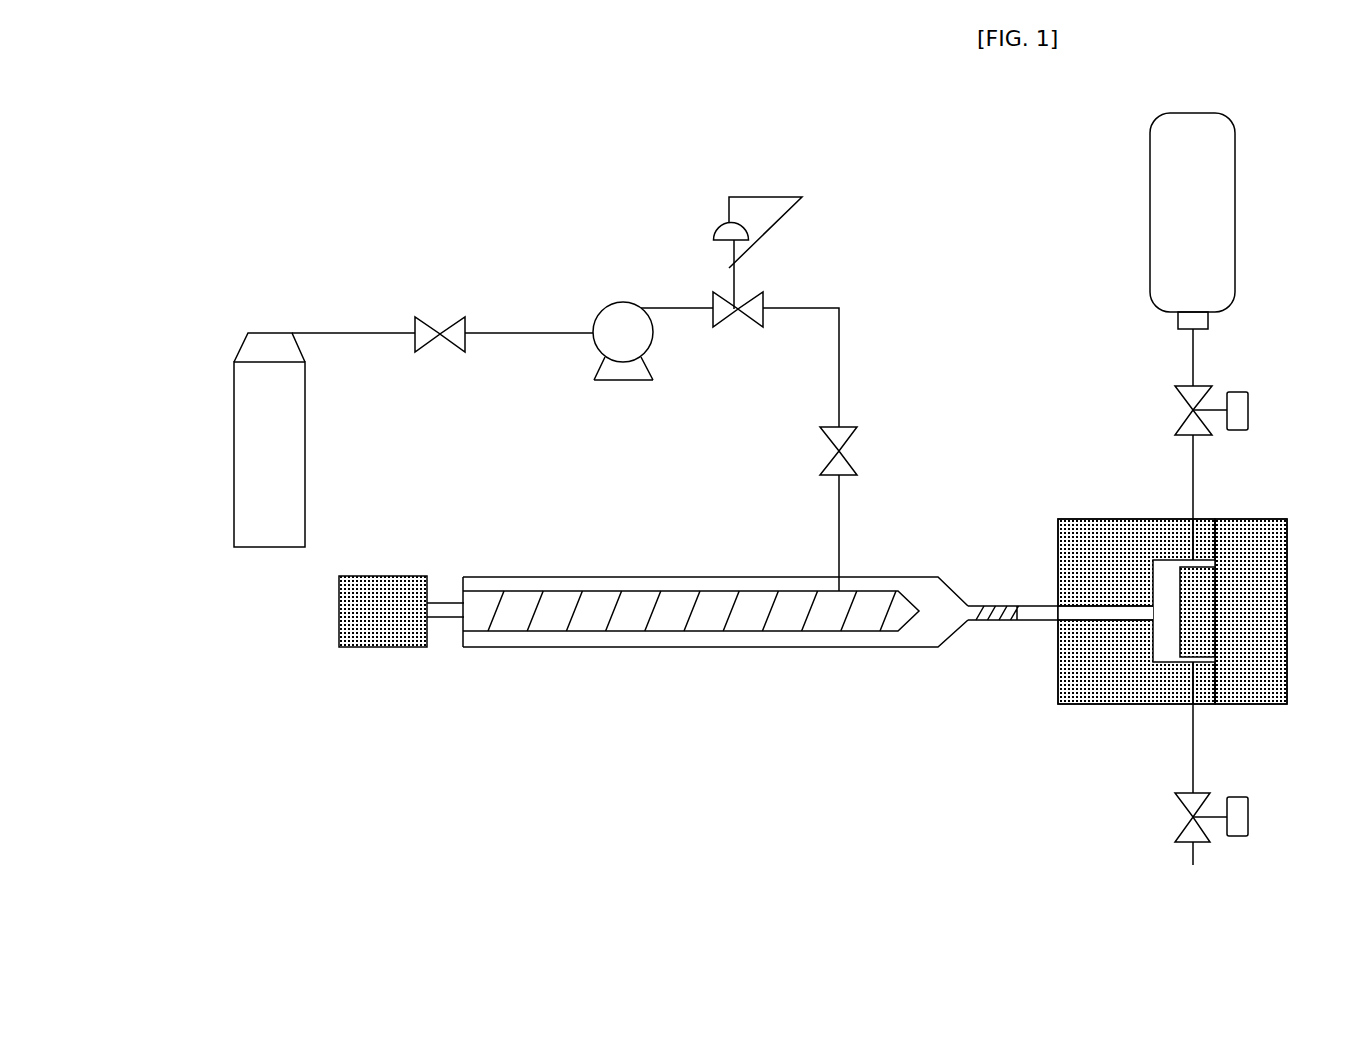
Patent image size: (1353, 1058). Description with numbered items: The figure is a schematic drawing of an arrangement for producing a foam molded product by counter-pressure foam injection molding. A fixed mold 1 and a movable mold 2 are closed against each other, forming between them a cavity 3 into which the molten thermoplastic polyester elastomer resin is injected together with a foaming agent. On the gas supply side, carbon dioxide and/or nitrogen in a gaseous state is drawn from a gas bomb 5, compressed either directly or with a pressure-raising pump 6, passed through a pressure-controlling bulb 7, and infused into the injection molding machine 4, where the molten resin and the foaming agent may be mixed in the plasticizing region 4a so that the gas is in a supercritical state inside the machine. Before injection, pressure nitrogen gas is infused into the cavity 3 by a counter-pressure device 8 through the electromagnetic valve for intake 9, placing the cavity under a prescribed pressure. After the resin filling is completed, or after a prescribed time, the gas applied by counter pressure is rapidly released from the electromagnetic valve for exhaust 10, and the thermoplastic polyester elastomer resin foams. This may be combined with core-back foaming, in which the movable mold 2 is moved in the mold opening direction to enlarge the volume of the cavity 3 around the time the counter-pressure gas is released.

The mold (for fixation) 1 is at (1128, 518).
The mold (for movement) 2 is at (1268, 518).
The cavity 3 is at (1162, 654).
The injection molding machine 4 is at (680, 649).
The plasticizing region 4a is at (703, 622).
The gas bomb 5 is at (263, 428).
The pressure-raising pump 6 is at (618, 317).
The pressure-controlling bulb 7 is at (722, 292).
The counter-pressure device 8 is at (1175, 182).
The electromagnetic valve for intake 9 is at (1242, 393).
The electromagnetic valve for exhaust 10 is at (1235, 796).